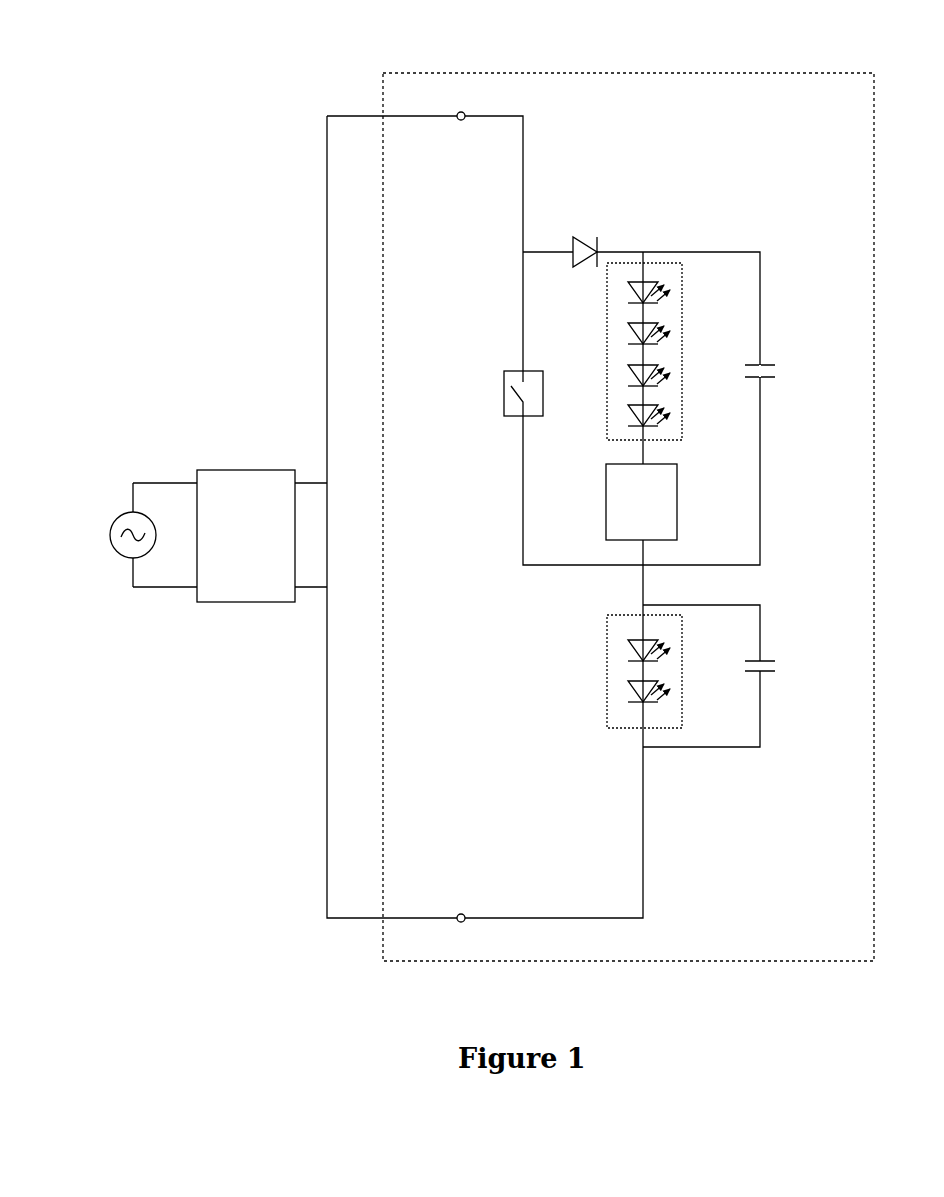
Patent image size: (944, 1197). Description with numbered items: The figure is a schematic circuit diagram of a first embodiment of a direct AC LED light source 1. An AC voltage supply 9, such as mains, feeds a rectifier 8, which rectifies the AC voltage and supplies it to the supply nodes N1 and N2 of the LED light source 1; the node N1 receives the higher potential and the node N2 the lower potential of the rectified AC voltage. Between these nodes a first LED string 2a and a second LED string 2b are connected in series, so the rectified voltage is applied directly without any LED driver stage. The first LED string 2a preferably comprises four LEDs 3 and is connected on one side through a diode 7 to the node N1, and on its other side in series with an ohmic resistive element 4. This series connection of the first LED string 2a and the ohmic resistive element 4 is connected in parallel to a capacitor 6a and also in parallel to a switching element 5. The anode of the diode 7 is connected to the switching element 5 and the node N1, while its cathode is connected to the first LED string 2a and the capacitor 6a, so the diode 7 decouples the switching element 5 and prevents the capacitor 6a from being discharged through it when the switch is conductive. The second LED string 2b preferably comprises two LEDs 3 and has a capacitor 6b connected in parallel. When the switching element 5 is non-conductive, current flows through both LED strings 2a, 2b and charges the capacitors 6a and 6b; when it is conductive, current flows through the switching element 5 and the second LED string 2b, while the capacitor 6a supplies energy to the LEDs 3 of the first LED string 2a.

The LED light source 1 is at (627, 72).
The supply node N1 is at (455, 121).
The supply node N2 is at (456, 910).
The diode 7 is at (585, 238).
The switching element 5 is at (500, 404).
The first LED string 2a is at (687, 331).
The second LED string 2b is at (687, 662).
The LED 3 is at (626, 291).
The capacitor 6a is at (783, 368).
The capacitor 6b is at (783, 664).
The ohmic resistive element 4 is at (641, 502).
The rectifier 8 is at (262, 536).
The AC voltage supply 9 is at (116, 509).